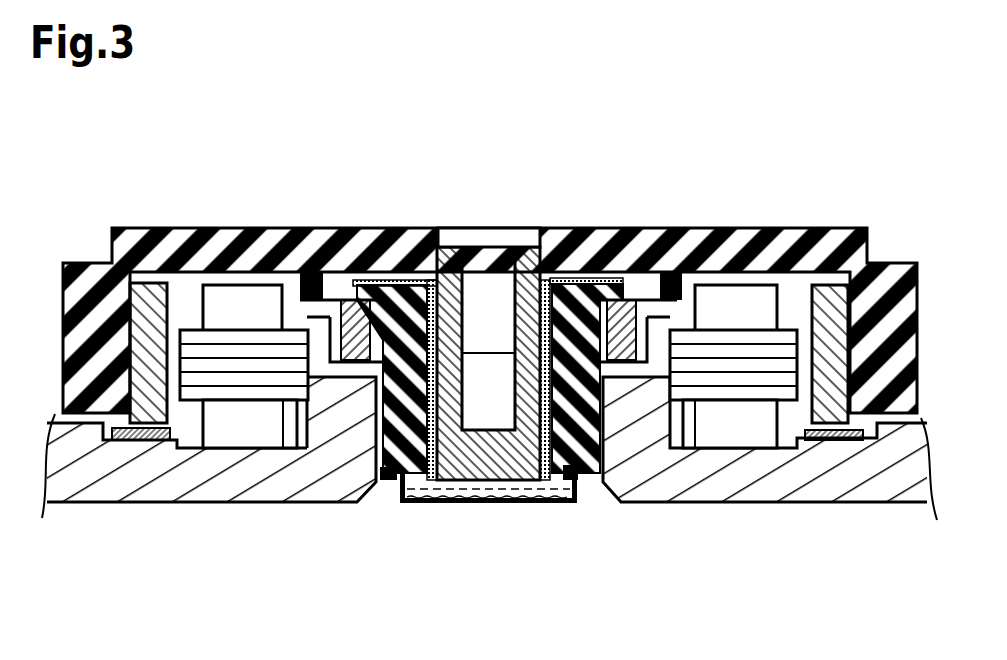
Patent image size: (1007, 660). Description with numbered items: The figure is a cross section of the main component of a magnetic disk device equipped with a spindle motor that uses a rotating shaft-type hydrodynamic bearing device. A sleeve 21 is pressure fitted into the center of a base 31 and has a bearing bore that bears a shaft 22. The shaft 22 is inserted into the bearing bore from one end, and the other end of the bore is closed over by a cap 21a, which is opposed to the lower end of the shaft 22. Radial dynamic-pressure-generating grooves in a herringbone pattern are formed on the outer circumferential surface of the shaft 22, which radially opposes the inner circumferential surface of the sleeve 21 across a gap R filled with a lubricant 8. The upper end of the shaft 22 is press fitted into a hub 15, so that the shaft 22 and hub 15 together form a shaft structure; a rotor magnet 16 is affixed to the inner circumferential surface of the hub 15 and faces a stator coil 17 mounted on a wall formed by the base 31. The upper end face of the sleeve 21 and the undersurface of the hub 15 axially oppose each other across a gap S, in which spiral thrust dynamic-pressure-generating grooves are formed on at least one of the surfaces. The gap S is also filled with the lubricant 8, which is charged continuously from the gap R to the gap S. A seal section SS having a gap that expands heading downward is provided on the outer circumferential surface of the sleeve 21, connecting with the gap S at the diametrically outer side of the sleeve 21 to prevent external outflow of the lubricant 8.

The lubricant 8 is at (573, 398).
The hub 15 is at (668, 248).
The rotor magnet 16 is at (830, 290).
The stator coil 17 is at (732, 293).
The sleeve 21 is at (385, 452).
The cap 21a is at (533, 503).
The shaft 22 is at (473, 221).
The base 31 is at (232, 463).
The gap R is at (398, 320).
The gap S is at (580, 280).
The seal section SS is at (380, 333).